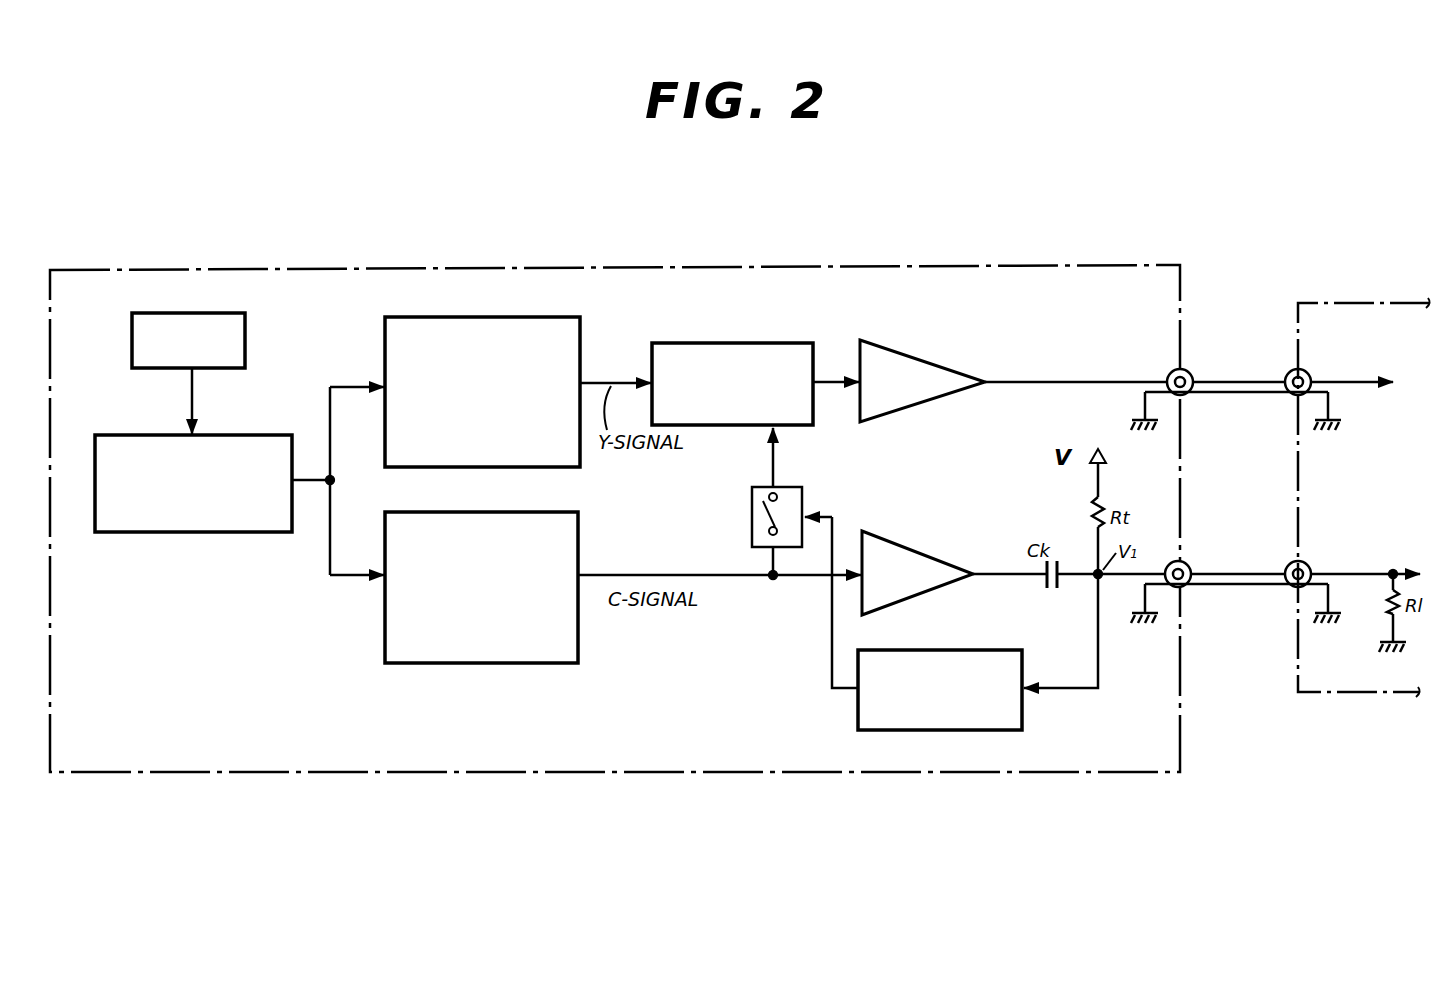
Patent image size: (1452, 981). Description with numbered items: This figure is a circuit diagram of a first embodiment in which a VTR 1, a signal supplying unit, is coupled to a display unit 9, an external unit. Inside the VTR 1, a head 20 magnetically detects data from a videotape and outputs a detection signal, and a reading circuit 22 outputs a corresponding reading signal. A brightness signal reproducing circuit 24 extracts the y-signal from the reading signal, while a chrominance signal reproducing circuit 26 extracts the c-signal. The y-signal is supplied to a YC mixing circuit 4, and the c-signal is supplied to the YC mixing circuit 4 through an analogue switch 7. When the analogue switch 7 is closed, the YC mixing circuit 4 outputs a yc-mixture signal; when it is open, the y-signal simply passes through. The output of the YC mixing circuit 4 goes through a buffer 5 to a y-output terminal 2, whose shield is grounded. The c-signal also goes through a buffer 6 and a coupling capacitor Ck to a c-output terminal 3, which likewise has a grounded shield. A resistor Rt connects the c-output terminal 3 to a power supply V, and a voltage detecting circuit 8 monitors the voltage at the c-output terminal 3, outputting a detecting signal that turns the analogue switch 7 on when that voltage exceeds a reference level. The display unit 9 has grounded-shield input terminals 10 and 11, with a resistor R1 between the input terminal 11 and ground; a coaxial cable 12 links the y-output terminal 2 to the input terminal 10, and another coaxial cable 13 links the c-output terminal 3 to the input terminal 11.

The VTR 1 is at (1085, 262).
The y-output terminal 2 is at (1190, 370).
The c-output terminal 3 is at (1186, 560).
The YC mixing circuit 4 is at (775, 343).
The buffer 5 is at (905, 352).
The buffer 6 is at (920, 553).
The analogue switch 7 is at (800, 492).
The voltage detecting circuit 8 is at (995, 650).
The display unit 9 is at (1365, 297).
The input terminal 10 is at (1290, 372).
The input terminal 11 is at (1288, 563).
The coaxial cable 12 is at (1218, 395).
The coaxial cable 13 is at (1242, 588).
The head 20 is at (245, 334).
The reading circuit 22 is at (202, 532).
The brightness signal reproducing circuit 24 is at (508, 316).
The chrominance signal reproducing circuit 26 is at (555, 663).